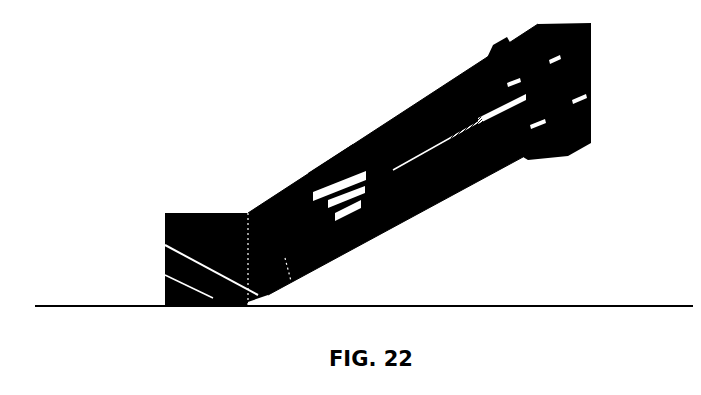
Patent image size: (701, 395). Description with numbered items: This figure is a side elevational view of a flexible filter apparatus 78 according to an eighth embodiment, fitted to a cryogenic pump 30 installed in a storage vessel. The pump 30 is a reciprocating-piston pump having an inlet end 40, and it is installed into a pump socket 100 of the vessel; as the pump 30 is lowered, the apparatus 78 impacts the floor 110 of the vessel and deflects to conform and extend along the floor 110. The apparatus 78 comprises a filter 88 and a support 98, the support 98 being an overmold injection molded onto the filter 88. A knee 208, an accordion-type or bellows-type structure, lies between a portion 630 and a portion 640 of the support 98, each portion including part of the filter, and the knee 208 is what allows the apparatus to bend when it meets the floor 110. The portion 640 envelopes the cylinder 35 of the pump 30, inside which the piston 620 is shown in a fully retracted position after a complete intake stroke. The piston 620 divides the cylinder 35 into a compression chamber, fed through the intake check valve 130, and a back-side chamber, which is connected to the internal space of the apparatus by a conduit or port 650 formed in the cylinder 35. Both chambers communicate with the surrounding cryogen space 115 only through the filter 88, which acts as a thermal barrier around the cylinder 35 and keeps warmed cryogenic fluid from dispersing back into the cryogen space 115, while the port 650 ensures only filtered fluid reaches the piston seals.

The cryogenic pump 30 is at (583, 106).
The cylinder 35 is at (430, 197).
The inlet end 40 is at (357, 237).
The flexible filter apparatus 78 is at (237, 123).
The filter 88 is at (166, 207).
The support 98 is at (318, 158).
The pump socket 100 is at (575, 134).
The floor 110 is at (72, 295).
The cryogen space 115 is at (48, 231).
The intake check valve 130 is at (352, 147).
The knee 208 is at (253, 198).
The piston 620 is at (460, 134).
The portion 630 is at (190, 207).
The portion 640 is at (393, 110).
The conduit 650 is at (462, 78).